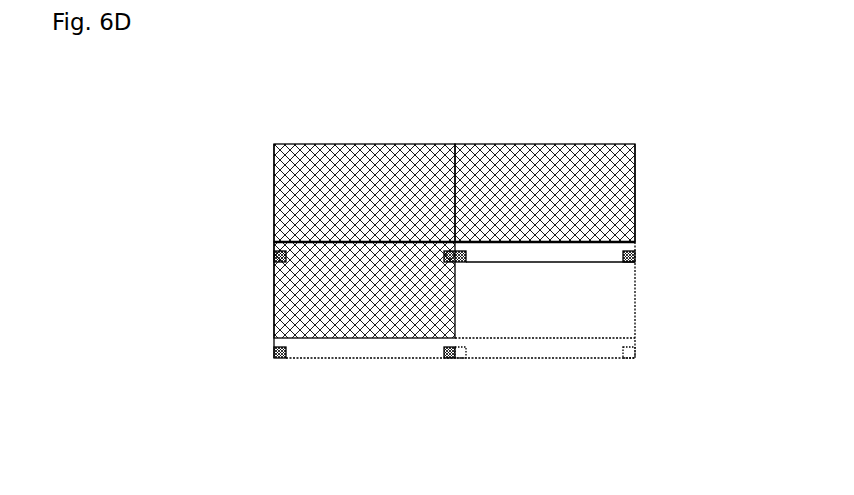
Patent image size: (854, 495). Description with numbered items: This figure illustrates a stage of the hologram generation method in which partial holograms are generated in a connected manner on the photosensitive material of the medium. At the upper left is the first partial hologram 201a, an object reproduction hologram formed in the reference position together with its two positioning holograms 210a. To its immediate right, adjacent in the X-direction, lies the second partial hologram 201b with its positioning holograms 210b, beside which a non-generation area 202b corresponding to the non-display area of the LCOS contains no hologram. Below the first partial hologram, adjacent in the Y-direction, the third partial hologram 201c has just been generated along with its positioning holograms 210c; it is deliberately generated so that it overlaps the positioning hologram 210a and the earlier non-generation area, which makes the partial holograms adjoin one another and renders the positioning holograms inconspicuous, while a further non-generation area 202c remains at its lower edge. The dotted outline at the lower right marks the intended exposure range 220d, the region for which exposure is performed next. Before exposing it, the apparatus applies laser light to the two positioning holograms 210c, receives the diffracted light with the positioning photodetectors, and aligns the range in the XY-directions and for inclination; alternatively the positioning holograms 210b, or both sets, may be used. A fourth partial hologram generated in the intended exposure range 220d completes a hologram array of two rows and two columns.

The partial hologram 201a is at (273, 190).
The partial hologram 201b is at (636, 188).
The partial hologram 201c is at (273, 300).
The positioning holograms 210a is at (273, 258).
The positioning holograms 210b is at (636, 256).
The positioning holograms 210c is at (274, 359).
The non-generation area 202b is at (537, 263).
The non-generation area 202c is at (445, 359).
The intended exposure range 220d is at (648, 326).